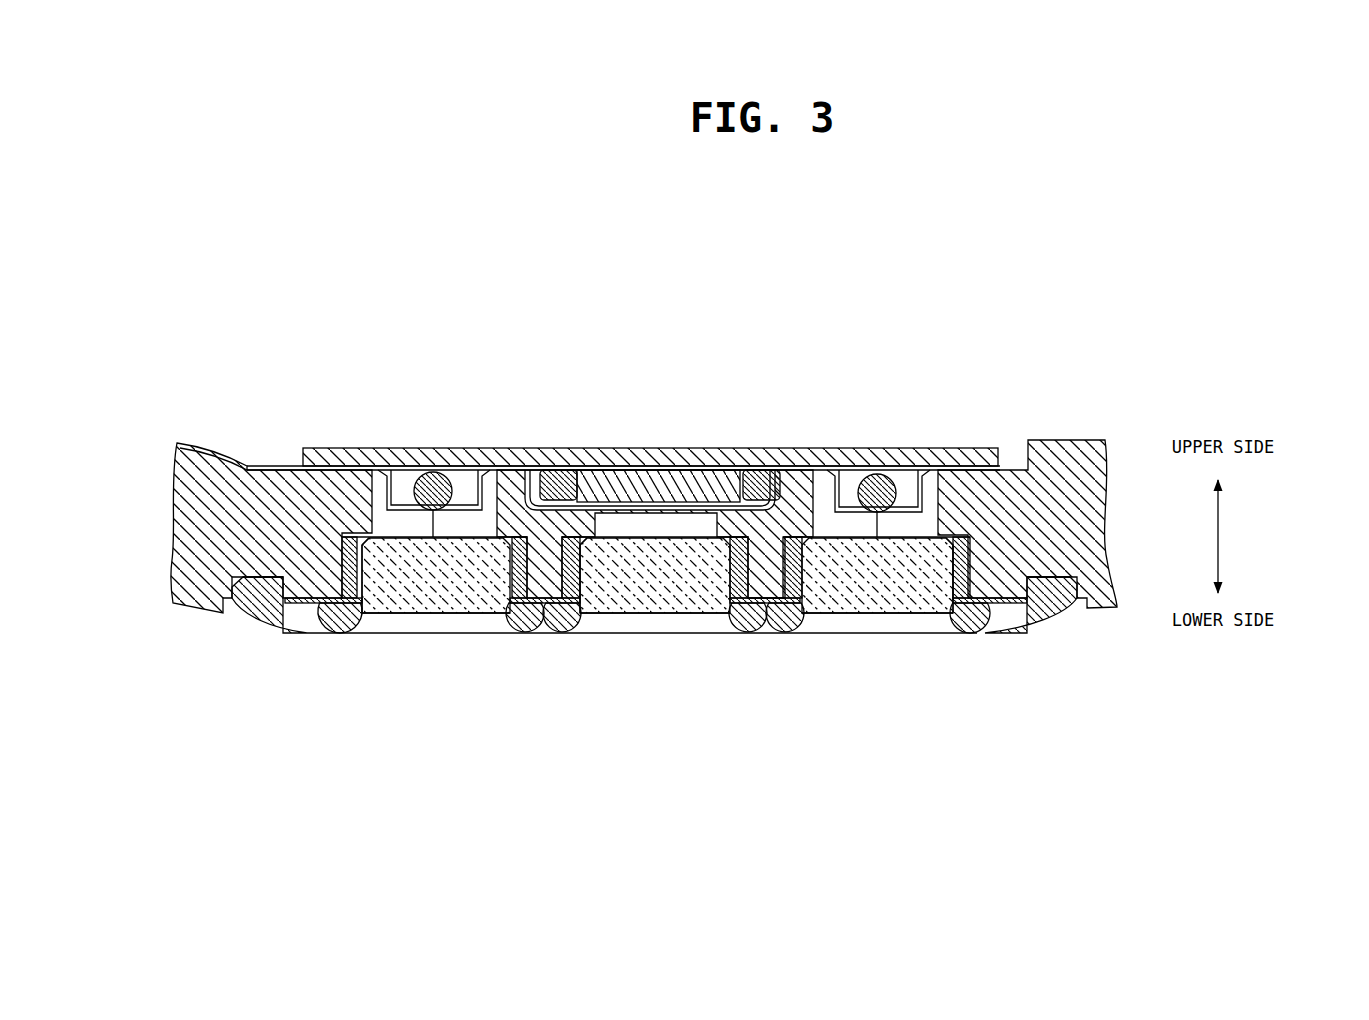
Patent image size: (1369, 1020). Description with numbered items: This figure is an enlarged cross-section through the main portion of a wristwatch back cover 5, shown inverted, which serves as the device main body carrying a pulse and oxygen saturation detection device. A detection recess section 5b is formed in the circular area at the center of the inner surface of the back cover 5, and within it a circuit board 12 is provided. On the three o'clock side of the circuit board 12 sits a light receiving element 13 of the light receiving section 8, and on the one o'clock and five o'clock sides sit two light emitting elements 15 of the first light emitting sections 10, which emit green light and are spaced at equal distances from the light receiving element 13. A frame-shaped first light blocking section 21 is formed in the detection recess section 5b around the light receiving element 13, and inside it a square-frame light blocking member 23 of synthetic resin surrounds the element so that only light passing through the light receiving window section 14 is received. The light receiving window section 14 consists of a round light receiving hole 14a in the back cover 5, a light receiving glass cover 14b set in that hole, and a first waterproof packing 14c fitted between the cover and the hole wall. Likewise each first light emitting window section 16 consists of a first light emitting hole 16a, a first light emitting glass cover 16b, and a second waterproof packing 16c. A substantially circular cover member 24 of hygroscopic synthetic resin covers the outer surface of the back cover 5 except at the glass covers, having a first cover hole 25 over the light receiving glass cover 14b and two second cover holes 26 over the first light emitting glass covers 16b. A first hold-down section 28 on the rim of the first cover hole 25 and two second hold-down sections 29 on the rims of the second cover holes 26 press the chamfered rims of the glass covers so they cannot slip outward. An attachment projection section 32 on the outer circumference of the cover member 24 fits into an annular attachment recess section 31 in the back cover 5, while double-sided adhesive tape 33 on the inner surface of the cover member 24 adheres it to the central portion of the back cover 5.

The back cover 5 is at (232, 450).
The detection recess section 5b is at (389, 467).
The light receiving section 8 is at (622, 504).
The first light emitting sections 10 is at (460, 497).
The circuit board 12 is at (323, 449).
The light receiving element 13 is at (660, 470).
The light receiving window section 14 is at (634, 618).
The light receiving hole 14a is at (545, 602).
The light receiving glass cover 14b is at (666, 614).
The first waterproof packing 14c is at (582, 590).
The light emitting elements 15 is at (432, 470).
The first light emitting window sections 16 is at (427, 618).
The first light emitting holes 16a is at (345, 578).
The first light emitting glass covers 16b is at (448, 588).
The second waterproof packings 16c is at (368, 562).
The first light blocking section 21 is at (506, 470).
The light blocking member 23 is at (560, 468).
The cover member 24 is at (765, 636).
The first cover hole 25 is at (713, 616).
The second cover holes 26 is at (348, 622).
The first hold-down section 28 is at (560, 626).
The second hold-down sections 29 is at (350, 605).
The attachment recess section 31 is at (257, 577).
The attachment projection section 32 is at (258, 606).
The double-sided adhesive tape 33 is at (330, 601).